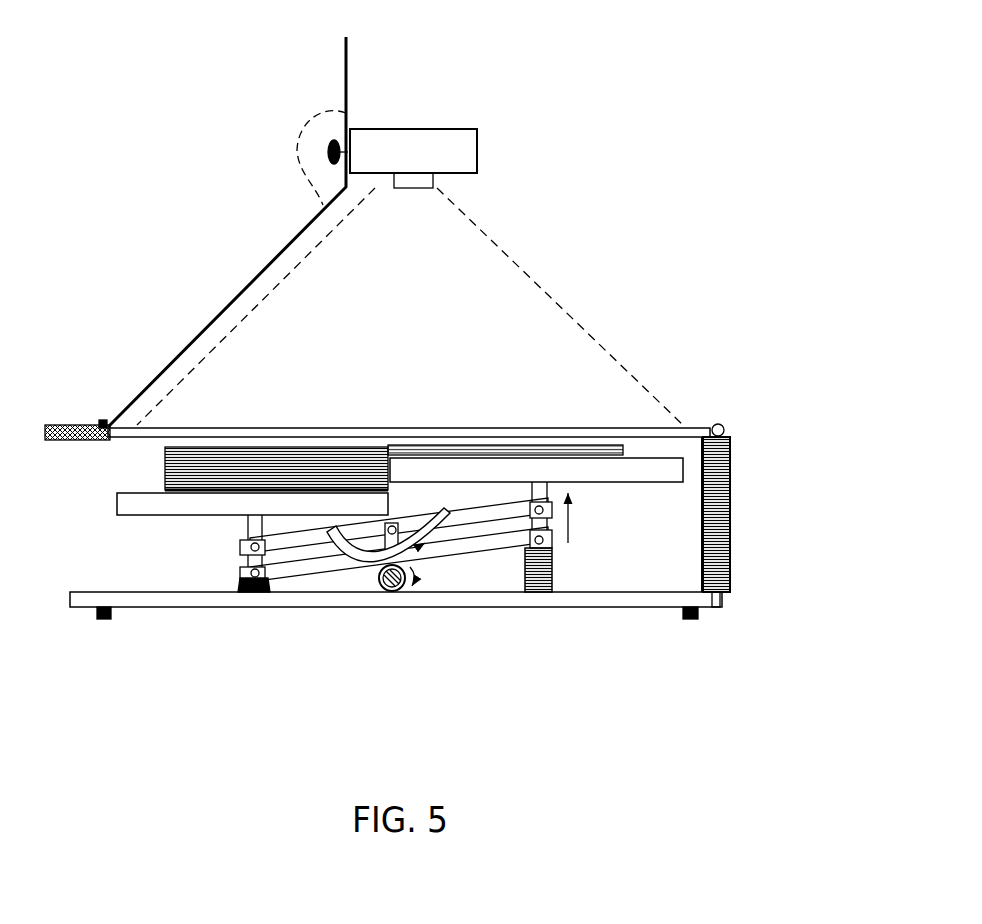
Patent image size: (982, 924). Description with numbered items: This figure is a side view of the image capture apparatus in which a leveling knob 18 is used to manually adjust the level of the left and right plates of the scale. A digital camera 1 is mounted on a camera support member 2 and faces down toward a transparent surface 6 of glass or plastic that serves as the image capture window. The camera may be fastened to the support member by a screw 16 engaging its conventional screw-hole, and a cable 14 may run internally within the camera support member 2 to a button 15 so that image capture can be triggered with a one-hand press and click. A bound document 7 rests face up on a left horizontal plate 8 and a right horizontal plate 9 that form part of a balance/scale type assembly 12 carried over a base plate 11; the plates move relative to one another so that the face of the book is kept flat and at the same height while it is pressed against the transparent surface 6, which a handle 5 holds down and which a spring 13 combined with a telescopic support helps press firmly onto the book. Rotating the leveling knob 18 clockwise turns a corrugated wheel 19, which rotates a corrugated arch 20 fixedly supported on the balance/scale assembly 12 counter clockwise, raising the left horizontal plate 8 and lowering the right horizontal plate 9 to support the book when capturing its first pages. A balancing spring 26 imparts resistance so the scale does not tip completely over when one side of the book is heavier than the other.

The digital camera 1 is at (428, 122).
The camera support member 2 is at (262, 250).
The handle 5 is at (59, 412).
The transparent surface 6 is at (405, 412).
The bound document 7 is at (150, 465).
The left horizontal plate 8 is at (647, 490).
The right horizontal plate 9 is at (112, 503).
The base plate 11 is at (511, 612).
The balance/scale type assembly 12 is at (493, 493).
The spring 13 is at (743, 457).
The cable 14 is at (283, 135).
The button (switch) 15 is at (97, 395).
The screw 16 is at (315, 127).
The leveling knob 18 is at (403, 597).
The corrugated wheel 19 is at (375, 588).
The corrugated arch 20 is at (340, 562).
The balancing spring 26 is at (562, 575).